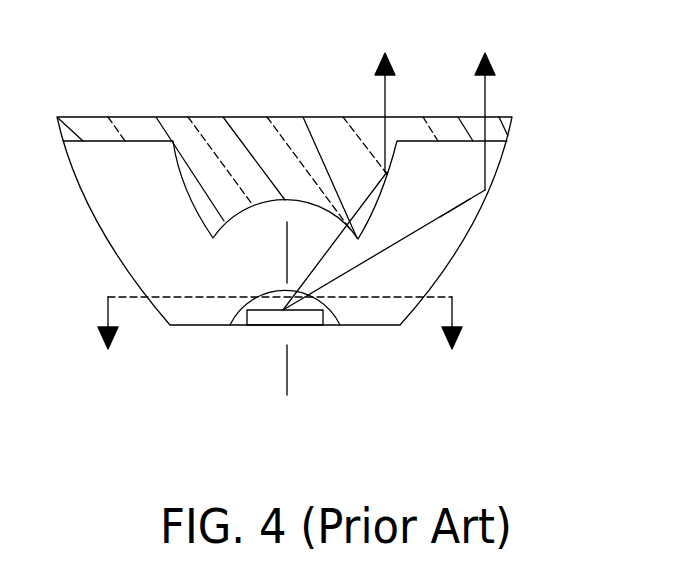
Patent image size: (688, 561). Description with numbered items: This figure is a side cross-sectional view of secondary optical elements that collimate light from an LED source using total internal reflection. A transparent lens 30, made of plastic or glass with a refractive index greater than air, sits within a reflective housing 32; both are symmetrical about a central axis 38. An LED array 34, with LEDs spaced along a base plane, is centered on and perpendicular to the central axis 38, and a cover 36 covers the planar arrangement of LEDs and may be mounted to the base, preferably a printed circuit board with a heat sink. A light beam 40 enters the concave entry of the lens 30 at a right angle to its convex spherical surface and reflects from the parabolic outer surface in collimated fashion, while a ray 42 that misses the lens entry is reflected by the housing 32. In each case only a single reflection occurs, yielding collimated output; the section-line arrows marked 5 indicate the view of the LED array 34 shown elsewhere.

The lens 30 is at (258, 141).
The reflective housing 32 is at (488, 200).
The LED array 34 is at (293, 318).
The cover 36 is at (263, 293).
The central axis 38 is at (283, 378).
The light beam 40 is at (330, 243).
The ray 42 is at (440, 217).
The section line 5 is at (280, 340).